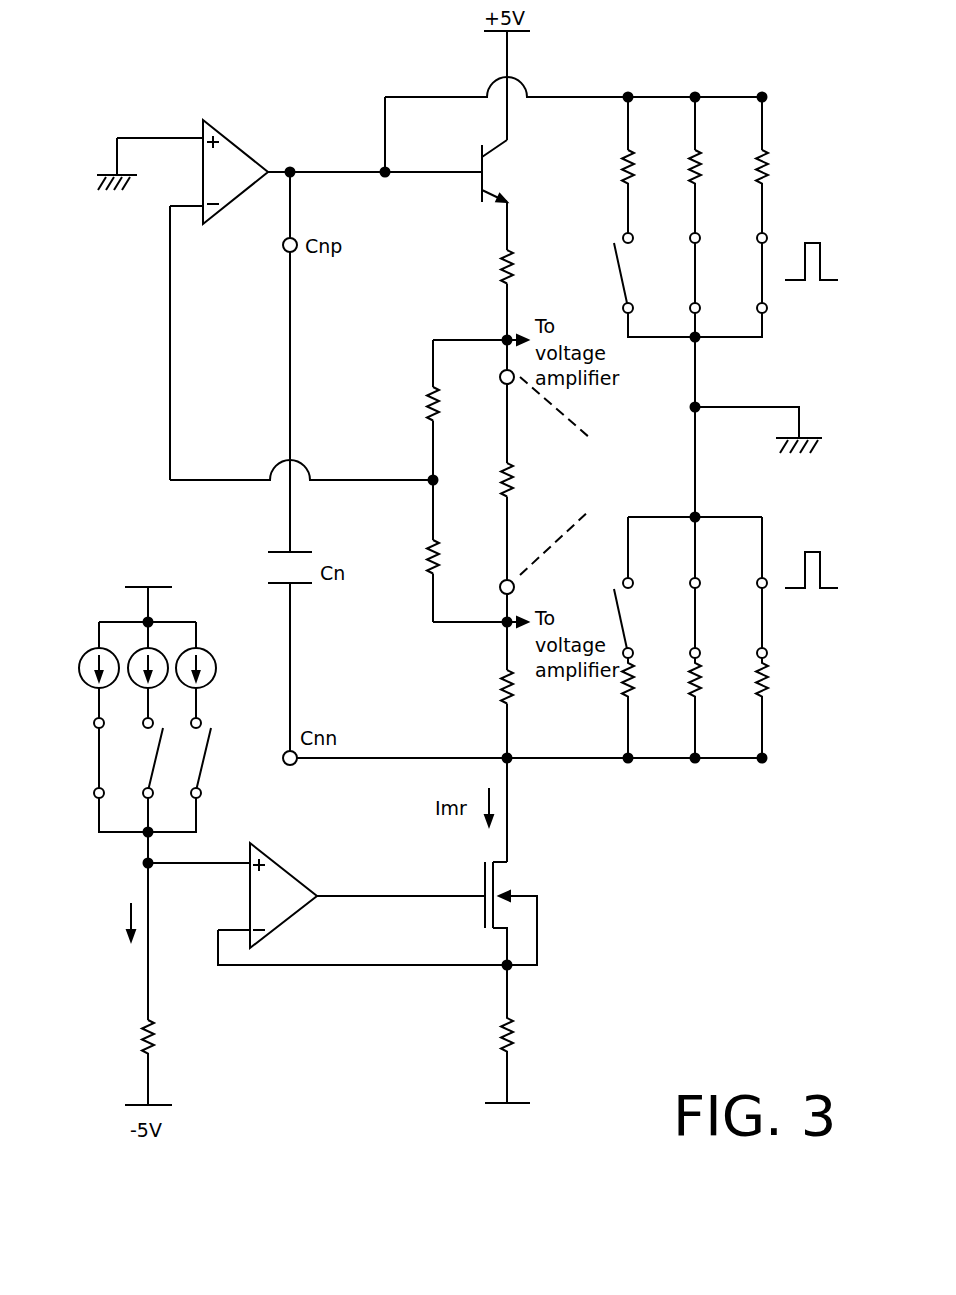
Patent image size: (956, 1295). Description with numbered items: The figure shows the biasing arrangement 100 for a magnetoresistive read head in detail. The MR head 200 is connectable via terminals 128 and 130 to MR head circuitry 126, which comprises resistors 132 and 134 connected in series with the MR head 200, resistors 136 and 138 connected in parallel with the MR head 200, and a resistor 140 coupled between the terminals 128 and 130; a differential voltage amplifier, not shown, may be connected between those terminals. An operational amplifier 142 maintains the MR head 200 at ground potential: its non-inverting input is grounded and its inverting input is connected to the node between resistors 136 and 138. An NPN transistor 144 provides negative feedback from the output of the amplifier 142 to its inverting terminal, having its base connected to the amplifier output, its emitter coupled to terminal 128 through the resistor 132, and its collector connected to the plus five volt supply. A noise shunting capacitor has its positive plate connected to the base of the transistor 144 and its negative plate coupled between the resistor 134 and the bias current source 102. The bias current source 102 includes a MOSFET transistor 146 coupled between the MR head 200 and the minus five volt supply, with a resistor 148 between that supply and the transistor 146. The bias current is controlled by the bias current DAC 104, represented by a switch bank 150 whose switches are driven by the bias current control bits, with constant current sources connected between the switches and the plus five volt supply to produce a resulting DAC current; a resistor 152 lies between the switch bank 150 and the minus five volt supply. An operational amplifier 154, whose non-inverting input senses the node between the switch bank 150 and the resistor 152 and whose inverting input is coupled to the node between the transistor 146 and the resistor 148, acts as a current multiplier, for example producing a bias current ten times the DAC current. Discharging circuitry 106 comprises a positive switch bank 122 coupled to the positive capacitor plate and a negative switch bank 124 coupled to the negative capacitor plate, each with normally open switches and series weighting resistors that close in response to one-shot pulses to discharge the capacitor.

The biasing arrangement 100 is at (366, 44).
The bias current source 102 is at (588, 869).
The Imr DAC 104 is at (107, 999).
The discharging circuitry 106 is at (757, 44).
The positive switch bank 122 is at (590, 229).
The negative switch bank 124 is at (655, 479).
The MR head circuitry 126 is at (445, 229).
The terminal 128 is at (484, 378).
The terminal 130 is at (484, 588).
The resistor 132 is at (484, 267).
The resistor 134 is at (484, 687).
The resistor 136 is at (412, 404).
The resistor 138 is at (413, 557).
The resistor 140 is at (484, 480).
The operational amplifier 142 is at (193, 295).
The NPN transistor 144 is at (510, 195).
The MOSFET transistor 146 is at (474, 913).
The resistor 148 is at (492, 1034).
The switch bank 150 is at (60, 704).
The resistor 152 is at (135, 1062).
The operational amplifier 154 is at (377, 904).
The MR head 200 is at (555, 476).